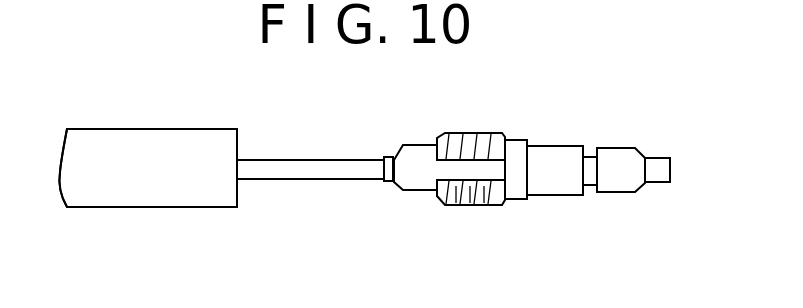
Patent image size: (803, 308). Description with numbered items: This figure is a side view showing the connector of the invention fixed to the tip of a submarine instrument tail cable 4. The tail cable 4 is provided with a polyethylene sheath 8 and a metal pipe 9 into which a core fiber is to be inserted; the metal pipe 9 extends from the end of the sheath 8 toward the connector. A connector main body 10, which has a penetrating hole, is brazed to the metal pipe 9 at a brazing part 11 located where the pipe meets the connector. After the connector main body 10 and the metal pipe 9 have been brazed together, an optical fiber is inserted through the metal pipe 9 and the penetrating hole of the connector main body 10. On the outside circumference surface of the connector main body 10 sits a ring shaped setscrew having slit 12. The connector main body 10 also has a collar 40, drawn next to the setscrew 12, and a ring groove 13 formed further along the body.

The submarine instrument tail cable 4 is at (152, 127).
The polyethylene sheath 8 is at (148, 200).
The metal pipe 9 is at (301, 166).
The brazing part 11 is at (390, 182).
The ring shaped setscrew having slit 12 is at (472, 131).
The collar 40 is at (512, 200).
The connector main body 10 is at (558, 156).
The ring groove 13 is at (587, 196).